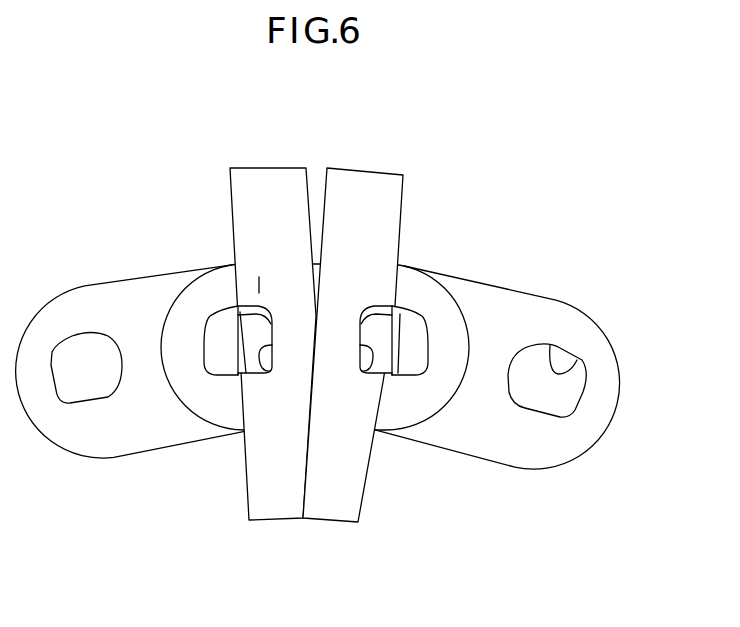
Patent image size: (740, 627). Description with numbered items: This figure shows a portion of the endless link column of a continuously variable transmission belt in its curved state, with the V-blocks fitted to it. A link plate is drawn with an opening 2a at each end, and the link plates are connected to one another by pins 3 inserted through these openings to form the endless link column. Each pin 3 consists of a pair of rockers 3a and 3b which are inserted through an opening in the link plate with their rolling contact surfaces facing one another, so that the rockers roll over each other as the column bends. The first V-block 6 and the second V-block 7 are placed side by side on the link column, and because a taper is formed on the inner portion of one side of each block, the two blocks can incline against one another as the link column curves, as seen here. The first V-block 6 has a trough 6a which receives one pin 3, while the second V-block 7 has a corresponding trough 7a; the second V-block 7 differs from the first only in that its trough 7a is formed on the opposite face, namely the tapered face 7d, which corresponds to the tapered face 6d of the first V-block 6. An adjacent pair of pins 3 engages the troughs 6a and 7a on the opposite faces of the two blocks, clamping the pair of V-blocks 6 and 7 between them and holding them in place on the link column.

The opening 2a is at (575, 359).
The pin 3 is at (190, 179).
The rocker 3a is at (253, 333).
The rocker 3b is at (212, 335).
The first V-block 6 is at (270, 180).
The trough 6a is at (253, 374).
The tapered face 6d is at (307, 480).
The second V-block 7 is at (362, 180).
The trough 7a is at (367, 376).
The tapered face 7d is at (364, 488).